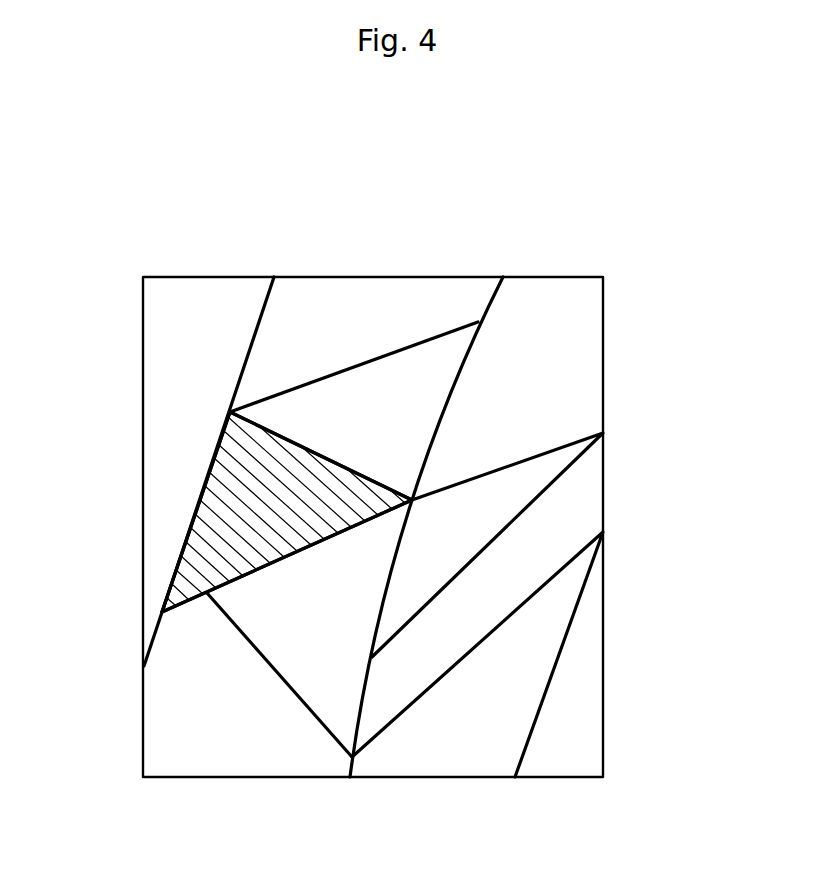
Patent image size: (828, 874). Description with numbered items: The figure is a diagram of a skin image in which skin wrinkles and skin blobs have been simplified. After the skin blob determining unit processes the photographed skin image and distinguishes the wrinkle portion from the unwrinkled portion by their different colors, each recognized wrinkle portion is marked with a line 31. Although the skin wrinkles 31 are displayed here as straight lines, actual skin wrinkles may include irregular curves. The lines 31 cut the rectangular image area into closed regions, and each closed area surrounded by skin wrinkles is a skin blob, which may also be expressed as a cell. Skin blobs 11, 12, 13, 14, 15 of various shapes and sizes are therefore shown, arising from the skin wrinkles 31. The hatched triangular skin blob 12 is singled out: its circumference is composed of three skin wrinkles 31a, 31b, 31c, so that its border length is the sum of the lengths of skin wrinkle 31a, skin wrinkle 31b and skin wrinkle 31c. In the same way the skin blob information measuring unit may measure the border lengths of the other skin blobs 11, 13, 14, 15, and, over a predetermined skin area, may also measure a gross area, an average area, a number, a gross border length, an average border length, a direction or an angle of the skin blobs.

The skin blob 11 is at (436, 366).
The skin blob 12 is at (206, 546).
The skin blob 13 is at (537, 475).
The skin blob 14 is at (328, 700).
The skin blob 15 is at (553, 548).
The line 31 is at (258, 320).
The skin wrinkle 31a is at (240, 408).
The skin wrinkle 31b is at (155, 605).
The skin wrinkle 31c is at (166, 613).